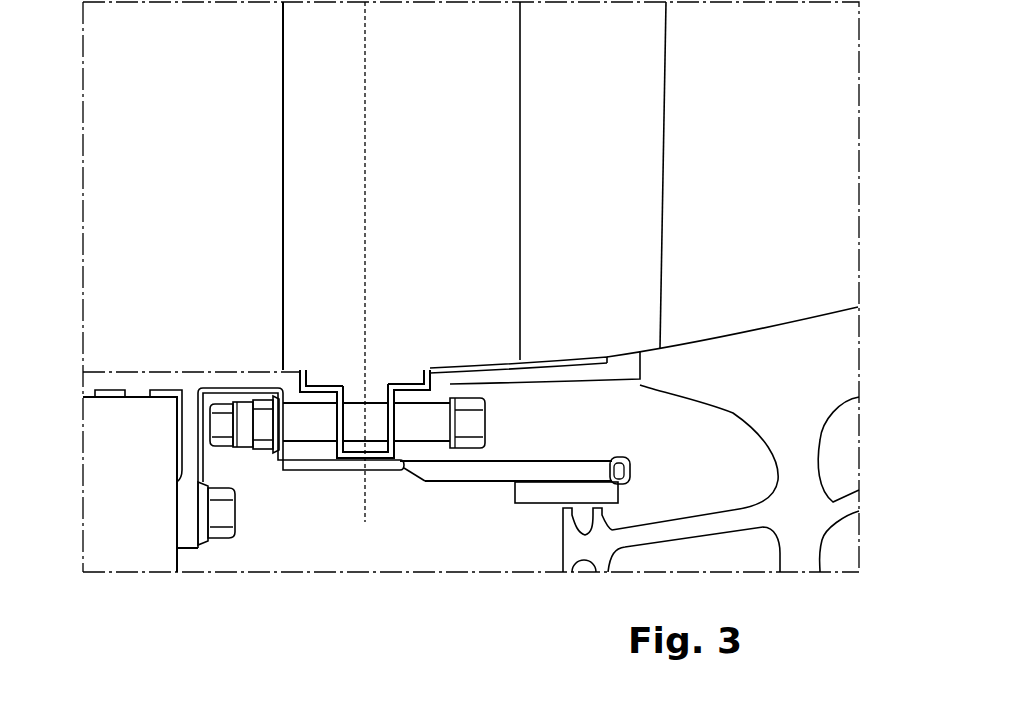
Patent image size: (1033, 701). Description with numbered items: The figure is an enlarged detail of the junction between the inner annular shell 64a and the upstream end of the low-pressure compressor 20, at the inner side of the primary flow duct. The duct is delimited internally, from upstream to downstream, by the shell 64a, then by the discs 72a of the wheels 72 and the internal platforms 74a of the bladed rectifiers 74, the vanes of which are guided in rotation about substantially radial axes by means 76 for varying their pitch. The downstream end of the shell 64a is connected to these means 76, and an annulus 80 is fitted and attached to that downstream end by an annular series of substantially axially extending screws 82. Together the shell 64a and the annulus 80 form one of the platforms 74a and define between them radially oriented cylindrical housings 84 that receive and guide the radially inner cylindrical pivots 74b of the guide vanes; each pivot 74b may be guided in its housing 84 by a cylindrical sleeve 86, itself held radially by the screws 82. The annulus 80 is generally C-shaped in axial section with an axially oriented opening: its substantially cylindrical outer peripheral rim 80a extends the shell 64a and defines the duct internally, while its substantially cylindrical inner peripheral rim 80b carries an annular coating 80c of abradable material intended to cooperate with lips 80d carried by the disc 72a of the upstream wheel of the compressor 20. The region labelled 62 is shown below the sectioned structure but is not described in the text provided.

The low-pressure compressor 20 is at (878, 307).
The inner structure 62 is at (128, 585).
The annular shell 64a is at (120, 370).
The wheels 72 is at (845, 427).
The disc 72a is at (797, 548).
The bladed rectifiers 74 is at (312, 136).
The internal platform 74a is at (292, 370).
The radially inner cylindrical pivot 74b is at (355, 392).
The means for guiding in rotation 76 is at (405, 498).
The annulus 80 is at (572, 350).
The outer peripheral rim 80a is at (532, 372).
The inner peripheral rim 80b is at (487, 470).
The annular coating 80c is at (538, 493).
The lips 80d is at (597, 513).
The screws 82 is at (308, 430).
The cylindrical housing 84 is at (352, 470).
The cylindrical sleeve 86 is at (385, 388).